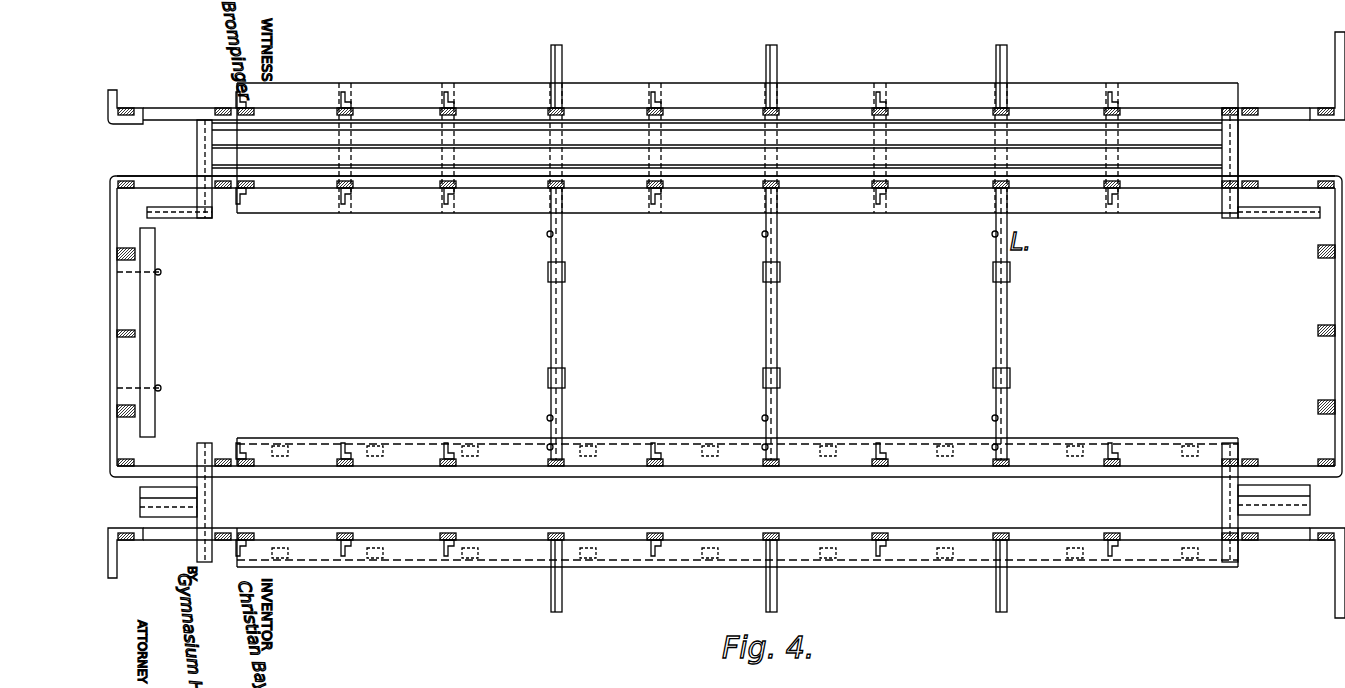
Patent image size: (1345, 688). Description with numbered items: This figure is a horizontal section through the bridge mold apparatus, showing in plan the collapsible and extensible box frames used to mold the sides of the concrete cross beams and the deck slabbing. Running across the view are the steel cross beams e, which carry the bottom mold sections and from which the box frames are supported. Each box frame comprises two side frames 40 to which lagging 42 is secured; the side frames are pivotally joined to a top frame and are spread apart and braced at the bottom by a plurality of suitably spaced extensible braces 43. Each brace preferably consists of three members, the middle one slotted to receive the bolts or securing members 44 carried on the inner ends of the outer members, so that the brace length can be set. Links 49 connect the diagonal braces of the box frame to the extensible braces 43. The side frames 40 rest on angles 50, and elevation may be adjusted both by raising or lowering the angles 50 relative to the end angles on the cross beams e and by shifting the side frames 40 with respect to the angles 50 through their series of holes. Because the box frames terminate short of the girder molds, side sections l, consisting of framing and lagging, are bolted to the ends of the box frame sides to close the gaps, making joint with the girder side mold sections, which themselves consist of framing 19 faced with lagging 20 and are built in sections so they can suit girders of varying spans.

The framing 19 is at (146, 300).
The lagging 20 is at (112, 372).
The side frames 40 is at (548, 100).
The lagging 42 is at (300, 110).
The extensible braces 43 is at (563, 68).
The bolts or securing members 44 is at (763, 272).
The links 49 is at (548, 236).
The angles 50 is at (436, 108).
The side sections l is at (178, 118).
The steel cross beams e is at (206, 166).